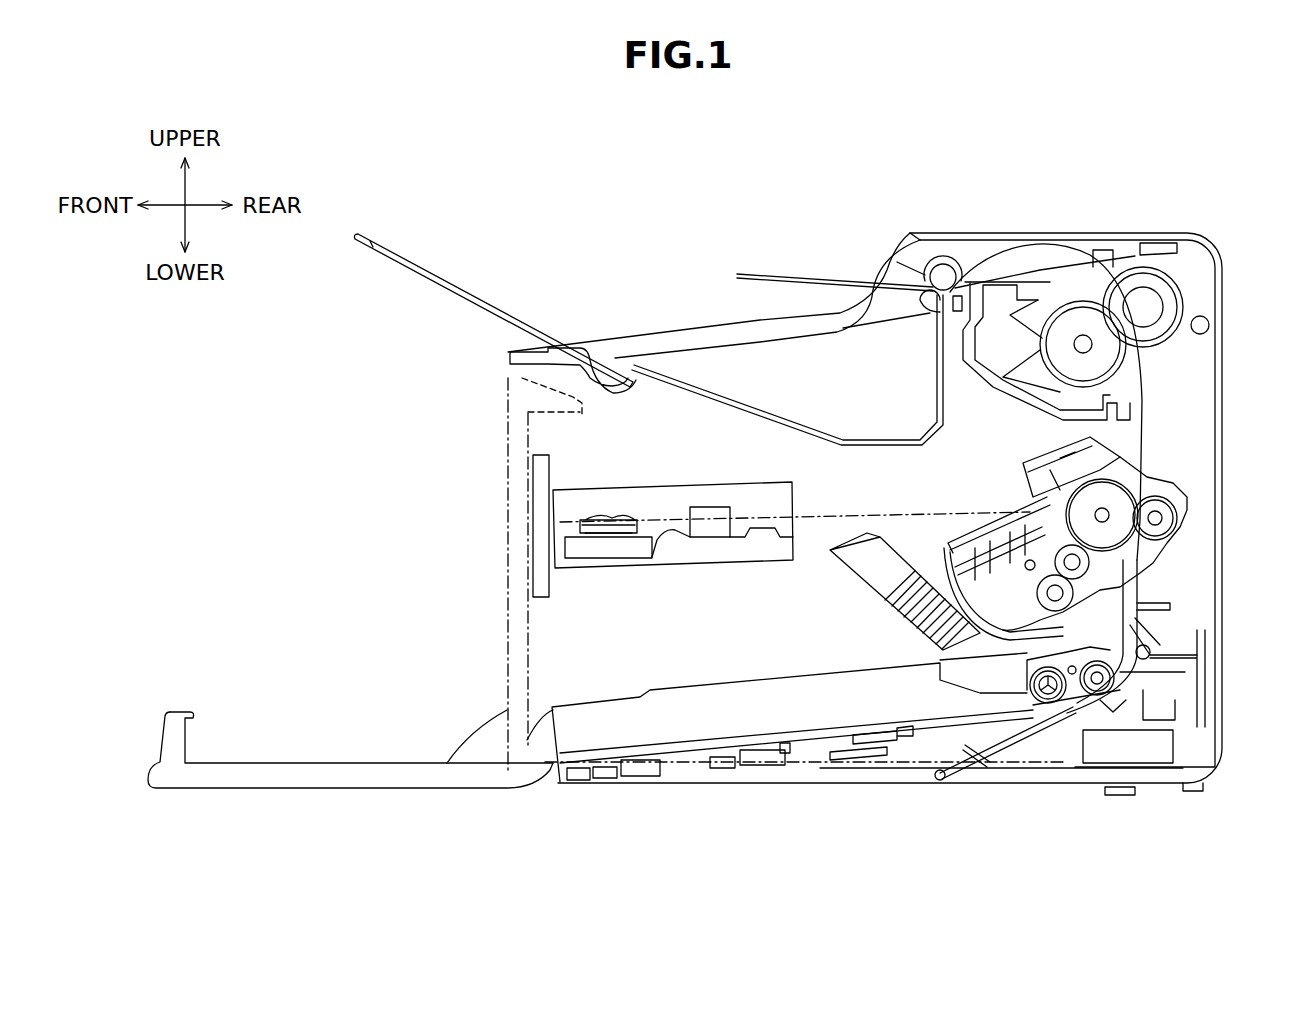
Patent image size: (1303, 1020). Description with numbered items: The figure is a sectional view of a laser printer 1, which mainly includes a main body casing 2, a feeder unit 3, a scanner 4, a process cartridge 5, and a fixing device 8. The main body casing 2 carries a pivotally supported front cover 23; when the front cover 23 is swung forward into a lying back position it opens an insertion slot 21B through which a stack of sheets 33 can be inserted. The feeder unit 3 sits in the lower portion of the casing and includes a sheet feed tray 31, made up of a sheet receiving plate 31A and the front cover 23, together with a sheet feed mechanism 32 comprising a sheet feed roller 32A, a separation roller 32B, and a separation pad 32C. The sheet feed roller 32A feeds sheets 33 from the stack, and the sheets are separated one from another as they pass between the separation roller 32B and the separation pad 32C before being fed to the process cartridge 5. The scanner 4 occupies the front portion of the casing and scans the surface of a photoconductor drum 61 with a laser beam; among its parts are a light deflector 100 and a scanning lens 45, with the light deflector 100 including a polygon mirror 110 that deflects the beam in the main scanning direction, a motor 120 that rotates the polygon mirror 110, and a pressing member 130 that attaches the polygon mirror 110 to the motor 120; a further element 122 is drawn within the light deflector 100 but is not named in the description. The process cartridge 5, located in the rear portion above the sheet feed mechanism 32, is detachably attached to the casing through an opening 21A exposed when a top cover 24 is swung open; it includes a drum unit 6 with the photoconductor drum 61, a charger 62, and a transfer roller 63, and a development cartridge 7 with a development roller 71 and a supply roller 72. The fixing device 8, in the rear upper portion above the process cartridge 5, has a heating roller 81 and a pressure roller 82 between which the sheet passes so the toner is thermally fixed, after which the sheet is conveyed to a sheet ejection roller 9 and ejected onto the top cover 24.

The laser printer 1 is at (594, 201).
The main body casing 2 is at (1230, 720).
The feeder unit 3 is at (586, 660).
The scanner 4 is at (795, 496).
The process cartridge 5 is at (1003, 456).
The drum unit 6 is at (1127, 449).
The development cartridge 7 is at (976, 527).
The fixing device 8 is at (1192, 264).
The sheet ejection roller 9 is at (946, 262).
The opening 21A is at (772, 400).
The insertion slot 21B is at (580, 735).
The front cover 23 is at (508, 652).
The top cover 24 is at (718, 394).
The sheet feed tray 31 is at (184, 702).
The sheet receiving plate 31A is at (826, 728).
The sheet feed mechanism 32 is at (1013, 672).
The sheet feed roller 32A is at (1068, 705).
The separation roller 32B is at (1150, 672).
The separation pad 32C is at (1113, 706).
The sheet 33 is at (790, 276).
The scanning lens 45 is at (718, 530).
The photoconductor drum 61 is at (1150, 492).
The charger 62 is at (1075, 452).
The transfer roller 63 is at (1180, 520).
The development roller 71 is at (1110, 572).
The supply roller 72 is at (1100, 613).
The heating roller 81 is at (1058, 345).
The pressure roller 82 is at (1155, 292).
The light deflector 100 is at (585, 505).
The polygon mirror 110 is at (575, 525).
The motor 120 is at (560, 548).
The lens 122 is at (632, 540).
The pressing member 130 is at (627, 520).